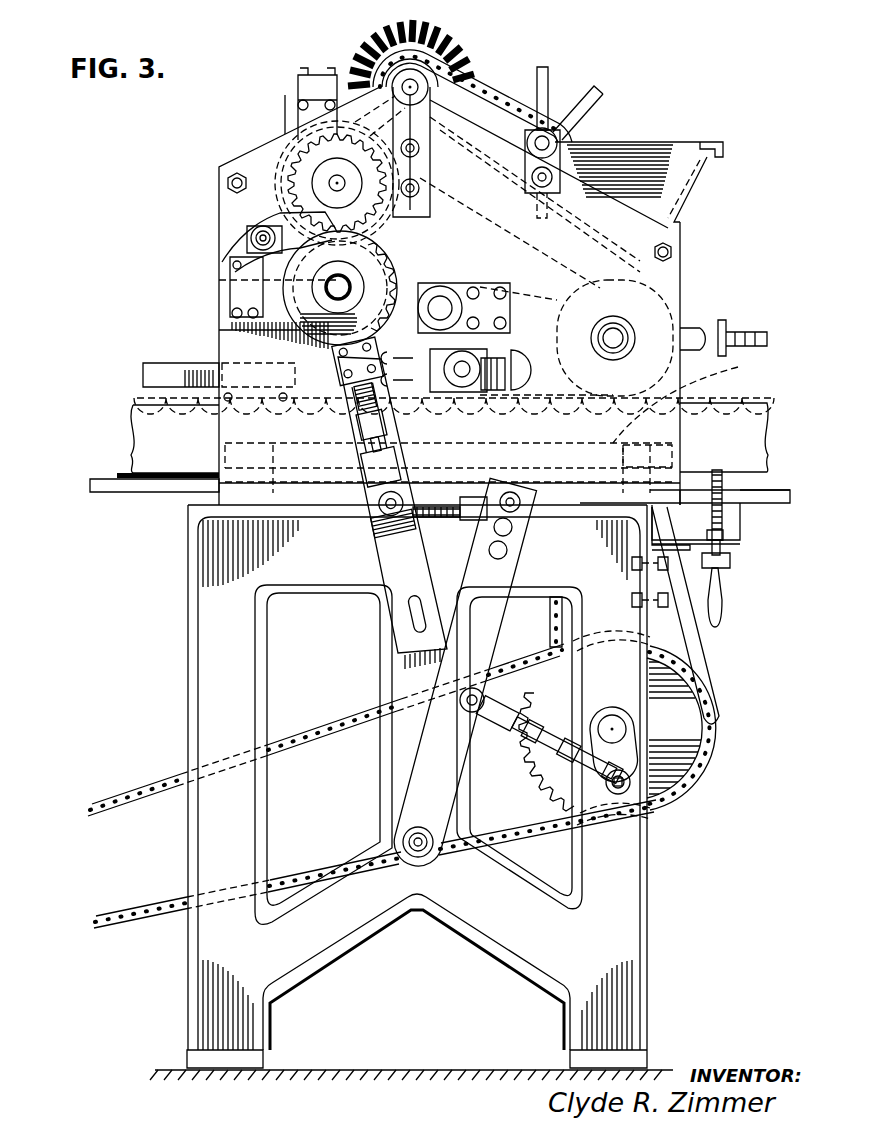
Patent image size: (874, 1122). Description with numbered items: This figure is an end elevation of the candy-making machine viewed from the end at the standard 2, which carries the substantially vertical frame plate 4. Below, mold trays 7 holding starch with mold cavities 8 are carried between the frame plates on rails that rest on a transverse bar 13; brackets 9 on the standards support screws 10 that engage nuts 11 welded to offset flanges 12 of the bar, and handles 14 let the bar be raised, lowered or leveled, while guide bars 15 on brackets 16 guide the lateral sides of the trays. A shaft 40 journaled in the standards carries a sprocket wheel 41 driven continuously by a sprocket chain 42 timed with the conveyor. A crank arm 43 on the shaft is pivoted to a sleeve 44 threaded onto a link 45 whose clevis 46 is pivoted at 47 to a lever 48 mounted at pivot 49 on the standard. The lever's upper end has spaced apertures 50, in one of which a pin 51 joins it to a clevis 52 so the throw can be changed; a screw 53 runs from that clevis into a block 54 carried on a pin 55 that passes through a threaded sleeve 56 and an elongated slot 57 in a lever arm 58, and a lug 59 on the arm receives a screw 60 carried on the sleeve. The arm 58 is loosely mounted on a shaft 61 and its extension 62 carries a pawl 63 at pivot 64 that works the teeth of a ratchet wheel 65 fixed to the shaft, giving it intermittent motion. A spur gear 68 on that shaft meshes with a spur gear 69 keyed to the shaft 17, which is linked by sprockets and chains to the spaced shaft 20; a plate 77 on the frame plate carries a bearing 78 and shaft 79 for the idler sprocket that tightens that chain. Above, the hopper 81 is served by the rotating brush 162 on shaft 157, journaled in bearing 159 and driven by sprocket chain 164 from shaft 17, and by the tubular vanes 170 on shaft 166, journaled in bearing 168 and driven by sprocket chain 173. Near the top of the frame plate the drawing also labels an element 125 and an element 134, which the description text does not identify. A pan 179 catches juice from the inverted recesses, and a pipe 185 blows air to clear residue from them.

The standard 2 is at (190, 615).
The frame plate 4 is at (684, 260).
The mold tray 7 is at (735, 432).
The mold cavity 8 is at (133, 427).
The bracket 9 is at (700, 622).
The screw 10 is at (724, 524).
The nut 11 is at (705, 503).
The offset flange 12 is at (726, 534).
The transverse bar 13 is at (742, 493).
The handle 14 is at (723, 598).
The guide bar 15 is at (687, 400).
The bracket 16 is at (650, 457).
The shaft 17 is at (333, 187).
The shaft 20 is at (625, 335).
The shaft 40 is at (627, 730).
The sprocket wheel 41 is at (543, 768).
The sprocket chain 42 is at (294, 736).
The crank arm 43 is at (627, 752).
The sleeve 44 is at (593, 770).
The link 45 is at (543, 742).
The clevis 46 is at (500, 729).
The pivot 47 is at (470, 712).
The lever 48 is at (430, 747).
The pivot 49 is at (433, 845).
The spaced apertures 50 is at (508, 548).
The pin 51 is at (538, 503).
The clevis 52 is at (480, 521).
The screw 53 is at (443, 518).
The block 54 is at (390, 565).
The pin 55 is at (385, 548).
The threaded sleeve 56 is at (362, 516).
The elongated slot 57 is at (395, 582).
The lever arm 58 is at (372, 475).
The lug 59 is at (343, 366).
The screw 60 is at (367, 400).
The shaft 61 is at (320, 305).
The extension 62 is at (300, 209).
The pawl 63 is at (293, 218).
The pivot 64 is at (255, 238).
The ratchet wheel 65 is at (374, 246).
The spur gear 68 is at (318, 290).
The spur gear 69 is at (296, 155).
The plate 77 is at (418, 292).
The bearing 78 is at (514, 348).
The shaft 79 is at (480, 363).
The hopper 81 is at (688, 141).
The bracket 125 is at (317, 83).
The rod 134 is at (283, 101).
The shaft 157 is at (412, 76).
The bearing 159 is at (404, 55).
The rotating brush 162 is at (443, 33).
The sprocket chain 164 is at (372, 45).
The shaft 166 is at (570, 141).
The bearing 168 is at (560, 126).
The tubular vane 170 is at (545, 67).
The sprocket chain 173 is at (485, 82).
The pan 179 is at (162, 352).
The pipe 185 is at (702, 330).